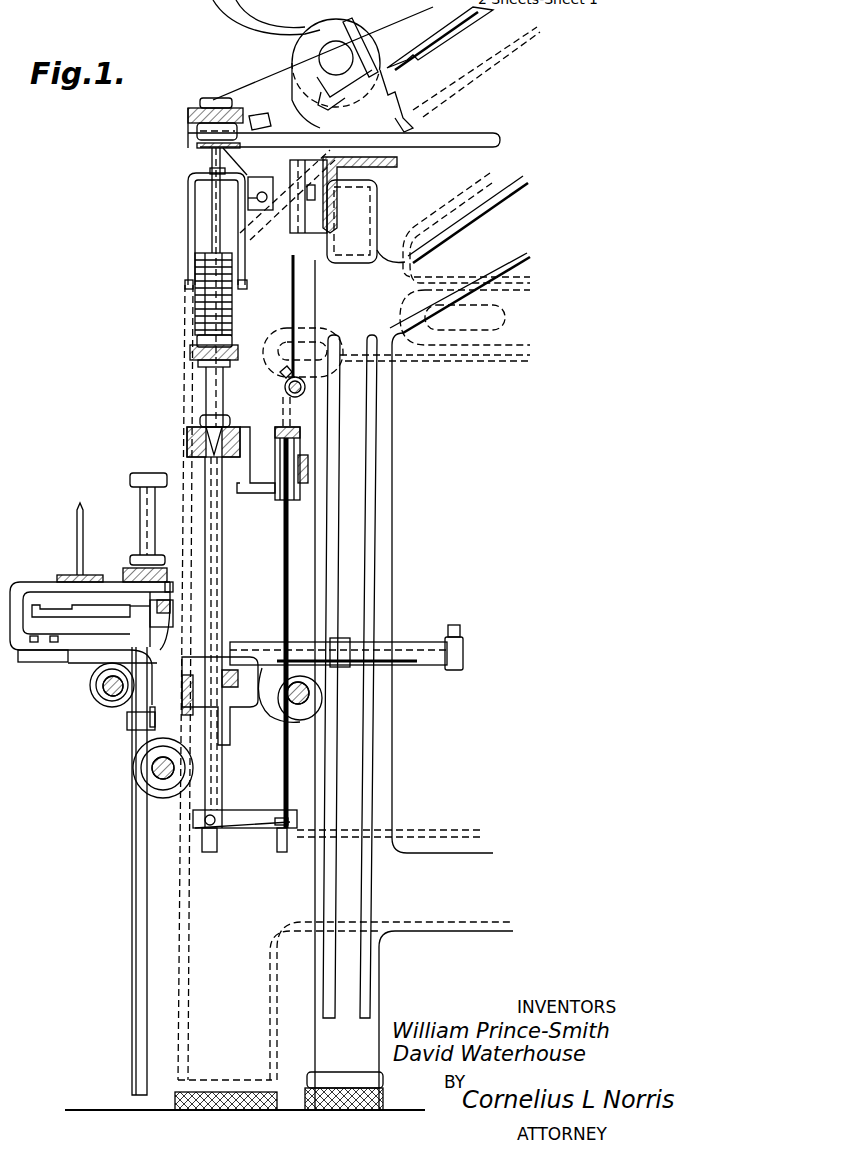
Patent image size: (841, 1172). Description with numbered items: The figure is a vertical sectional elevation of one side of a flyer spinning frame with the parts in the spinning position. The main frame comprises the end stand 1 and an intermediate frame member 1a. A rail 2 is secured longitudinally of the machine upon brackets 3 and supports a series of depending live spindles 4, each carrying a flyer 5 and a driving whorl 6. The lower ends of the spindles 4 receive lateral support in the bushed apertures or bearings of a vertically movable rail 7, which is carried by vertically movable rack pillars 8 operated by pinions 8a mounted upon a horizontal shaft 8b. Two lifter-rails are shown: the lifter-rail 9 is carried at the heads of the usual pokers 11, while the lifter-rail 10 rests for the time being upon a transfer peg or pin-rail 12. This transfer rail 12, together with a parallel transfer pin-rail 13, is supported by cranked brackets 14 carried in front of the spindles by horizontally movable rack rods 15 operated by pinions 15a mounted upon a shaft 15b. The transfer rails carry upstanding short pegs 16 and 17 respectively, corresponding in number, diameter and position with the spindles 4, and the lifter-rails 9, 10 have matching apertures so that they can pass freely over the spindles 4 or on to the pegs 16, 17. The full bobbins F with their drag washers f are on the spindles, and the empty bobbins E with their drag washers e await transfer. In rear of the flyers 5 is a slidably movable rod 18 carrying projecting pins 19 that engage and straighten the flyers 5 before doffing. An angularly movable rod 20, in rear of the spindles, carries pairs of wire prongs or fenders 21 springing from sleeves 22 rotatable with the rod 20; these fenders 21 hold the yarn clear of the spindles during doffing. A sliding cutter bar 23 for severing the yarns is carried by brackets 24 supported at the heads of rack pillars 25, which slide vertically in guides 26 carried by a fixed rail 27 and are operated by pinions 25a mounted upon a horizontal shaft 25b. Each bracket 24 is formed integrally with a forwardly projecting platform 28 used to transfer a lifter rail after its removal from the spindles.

The end stand 1 is at (185, 380).
The intermediate frame member 1a is at (385, 447).
The rail 2 is at (188, 115).
The brackets 3 is at (344, 152).
The live spindles 4 is at (212, 213).
The flyers 5 is at (188, 187).
The driving whorls 6 is at (205, 148).
The vertically movable rail 7 is at (190, 440).
The rack pillars 8 is at (222, 627).
The pinions 8a is at (133, 757).
The horizontal shaft 8b is at (155, 777).
The lifter-rail 9 is at (190, 352).
The lifter-rail 10 is at (140, 556).
The pokers 11 is at (212, 524).
The transfer peg or pin-rail 12 is at (125, 572).
The transfer peg or pin-rail 13 is at (60, 575).
The cranked brackets 14 is at (35, 582).
The rack rods 15 is at (396, 654).
The pinions 15a is at (285, 712).
The shaft 15b is at (284, 730).
The pegs or pins 16 is at (60, 662).
The pegs or pins 17 is at (77, 530).
The slidably movable rod 18 is at (262, 212).
The projecting pins 19 is at (213, 176).
The angularly movable rod 20 is at (288, 378).
The wire prongs or fenders 21 is at (292, 284).
The sleeves 22 is at (287, 393).
The sliding cutter bar 23 is at (173, 605).
The brackets 24 is at (130, 612).
The rack pillars 25 is at (135, 770).
The pinions 25a is at (91, 688).
The horizontal shaft 25b is at (108, 694).
The guides 26 is at (127, 724).
The fixed rail 27 is at (236, 690).
The platform 28 is at (57, 612).
The empty bobbins E is at (148, 473).
The full bobbins F is at (200, 305).
The drag washers f is at (200, 338).
The drag washers e is at (167, 565).